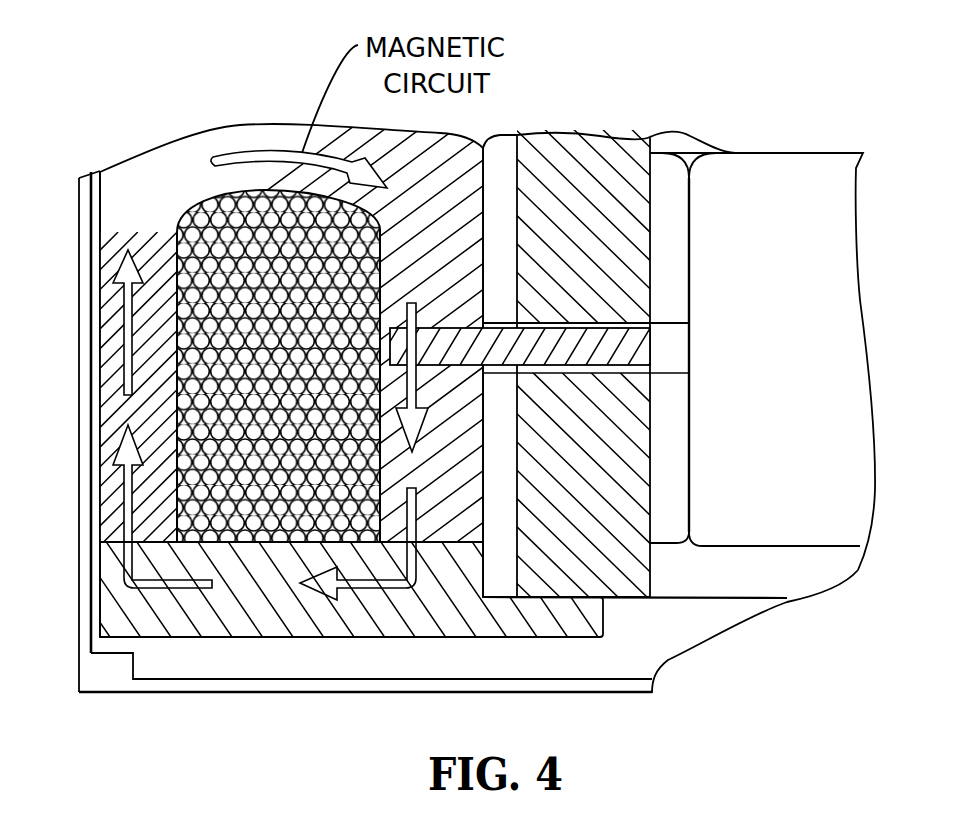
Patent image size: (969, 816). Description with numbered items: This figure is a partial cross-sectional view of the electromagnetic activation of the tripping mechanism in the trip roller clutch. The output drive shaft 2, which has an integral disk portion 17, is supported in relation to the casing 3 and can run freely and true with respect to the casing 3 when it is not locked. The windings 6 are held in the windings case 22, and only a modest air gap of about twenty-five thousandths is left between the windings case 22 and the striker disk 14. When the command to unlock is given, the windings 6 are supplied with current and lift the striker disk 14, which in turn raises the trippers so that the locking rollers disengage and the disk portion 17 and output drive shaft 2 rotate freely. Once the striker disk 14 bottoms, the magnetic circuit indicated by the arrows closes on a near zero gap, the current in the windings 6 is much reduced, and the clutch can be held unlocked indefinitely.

The output drive shaft 2 is at (778, 158).
The casing 3 is at (80, 208).
The windings 6 is at (193, 235).
The striker disk 14 is at (548, 622).
The disk portion 17 is at (776, 422).
The windings case 22 is at (107, 522).